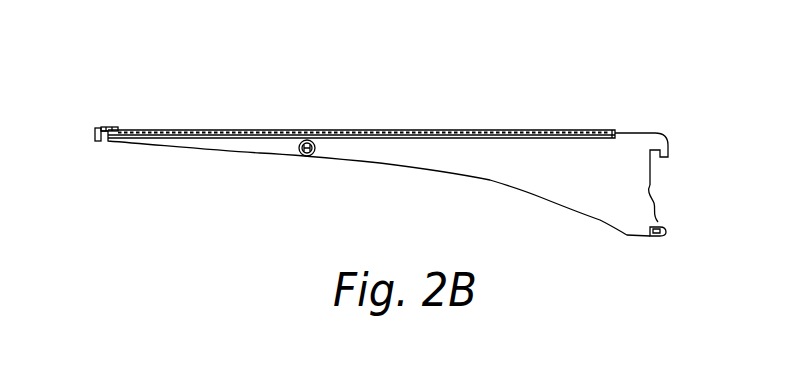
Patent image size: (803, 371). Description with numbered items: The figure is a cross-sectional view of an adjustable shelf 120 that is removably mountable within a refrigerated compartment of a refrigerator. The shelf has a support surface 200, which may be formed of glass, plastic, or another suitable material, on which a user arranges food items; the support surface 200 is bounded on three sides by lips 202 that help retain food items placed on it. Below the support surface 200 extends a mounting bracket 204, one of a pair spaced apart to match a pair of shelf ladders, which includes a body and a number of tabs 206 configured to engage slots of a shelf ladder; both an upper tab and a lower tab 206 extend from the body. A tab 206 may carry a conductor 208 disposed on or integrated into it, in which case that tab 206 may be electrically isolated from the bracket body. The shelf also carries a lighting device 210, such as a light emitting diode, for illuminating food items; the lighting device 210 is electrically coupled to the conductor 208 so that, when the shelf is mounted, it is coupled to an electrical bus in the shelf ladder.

The adjustable shelf 120 is at (212, 82).
The support surface 200 is at (503, 130).
The lips 202 is at (103, 128).
The mounting bracket 204 is at (551, 186).
The tabs 206 is at (645, 138).
The conductor 208 is at (666, 230).
The lighting device 210 is at (300, 155).